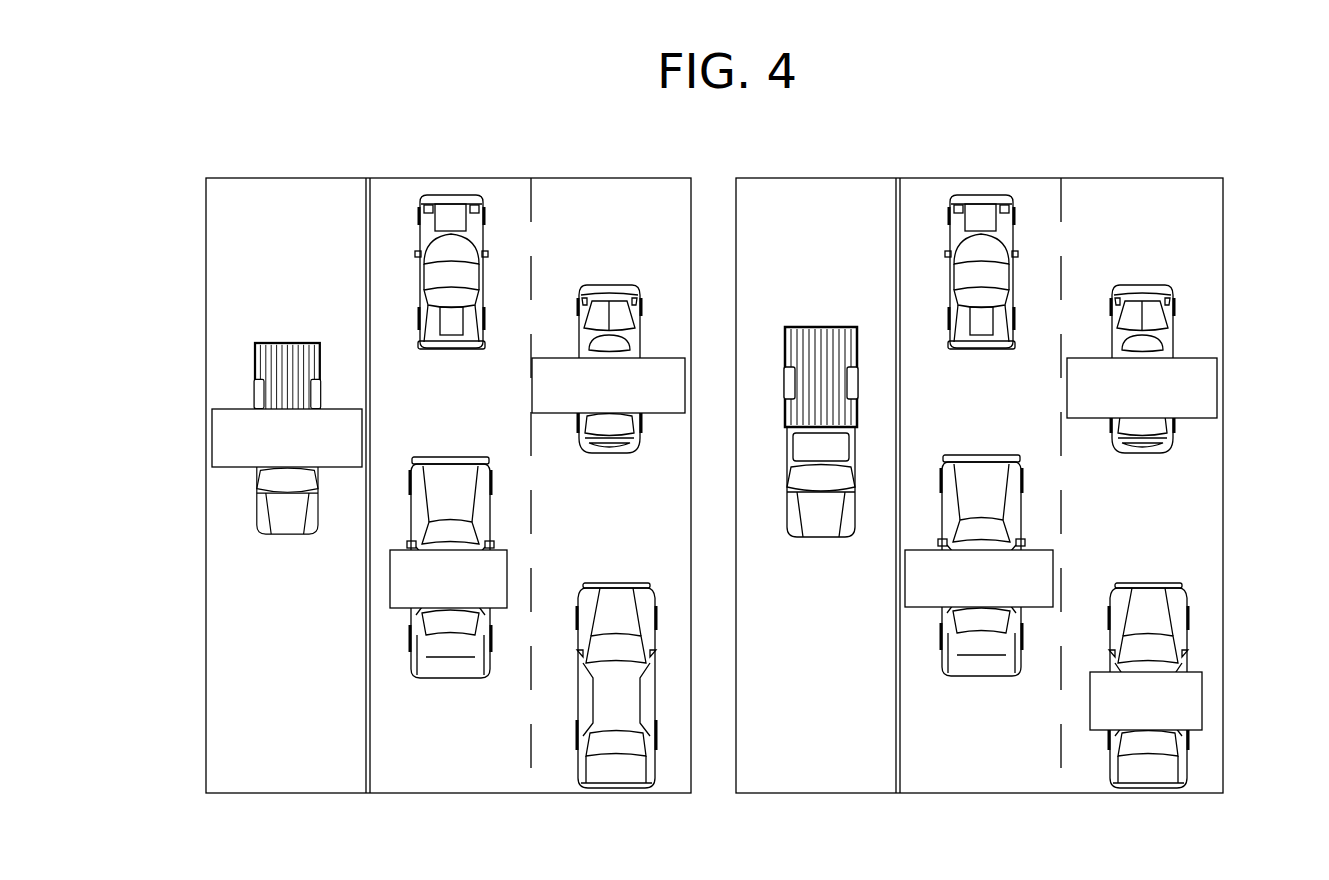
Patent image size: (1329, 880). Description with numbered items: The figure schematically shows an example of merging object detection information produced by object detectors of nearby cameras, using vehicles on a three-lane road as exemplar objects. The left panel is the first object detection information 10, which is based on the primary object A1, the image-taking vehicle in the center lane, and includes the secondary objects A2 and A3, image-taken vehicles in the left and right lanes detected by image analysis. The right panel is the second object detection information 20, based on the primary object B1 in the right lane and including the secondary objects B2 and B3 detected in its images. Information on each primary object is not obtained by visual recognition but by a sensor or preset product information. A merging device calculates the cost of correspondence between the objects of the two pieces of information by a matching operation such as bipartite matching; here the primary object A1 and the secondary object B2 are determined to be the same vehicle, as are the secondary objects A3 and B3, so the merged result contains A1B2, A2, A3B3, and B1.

The first object detection information 10 is at (489, 178).
The second object detection information 20 is at (1017, 178).
The primary object A1 is at (390, 577).
The secondary object A2 is at (212, 436).
The secondary object A3 is at (665, 358).
The primary object B1 is at (1203, 698).
The secondary object B2 is at (1061, 563).
The secondary object B3 is at (1218, 385).